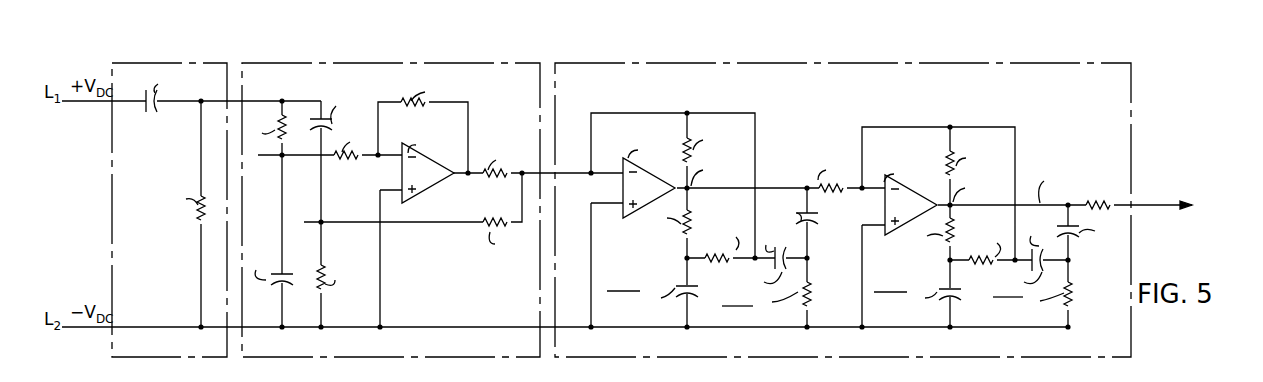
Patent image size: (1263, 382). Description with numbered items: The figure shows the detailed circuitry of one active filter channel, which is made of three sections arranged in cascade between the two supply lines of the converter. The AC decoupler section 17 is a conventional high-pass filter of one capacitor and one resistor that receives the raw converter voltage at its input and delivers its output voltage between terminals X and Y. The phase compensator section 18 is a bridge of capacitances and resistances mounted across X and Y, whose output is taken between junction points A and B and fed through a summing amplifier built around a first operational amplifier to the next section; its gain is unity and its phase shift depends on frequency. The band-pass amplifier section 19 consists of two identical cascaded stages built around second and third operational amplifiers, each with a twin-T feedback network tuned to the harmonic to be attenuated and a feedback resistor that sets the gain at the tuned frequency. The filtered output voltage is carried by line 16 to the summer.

The line 16 is at (1163, 203).
The AC decoupler section 17 is at (122, 63).
The phase compensator section 18 is at (255, 63).
The band-pass amplifier section 19 is at (565, 63).